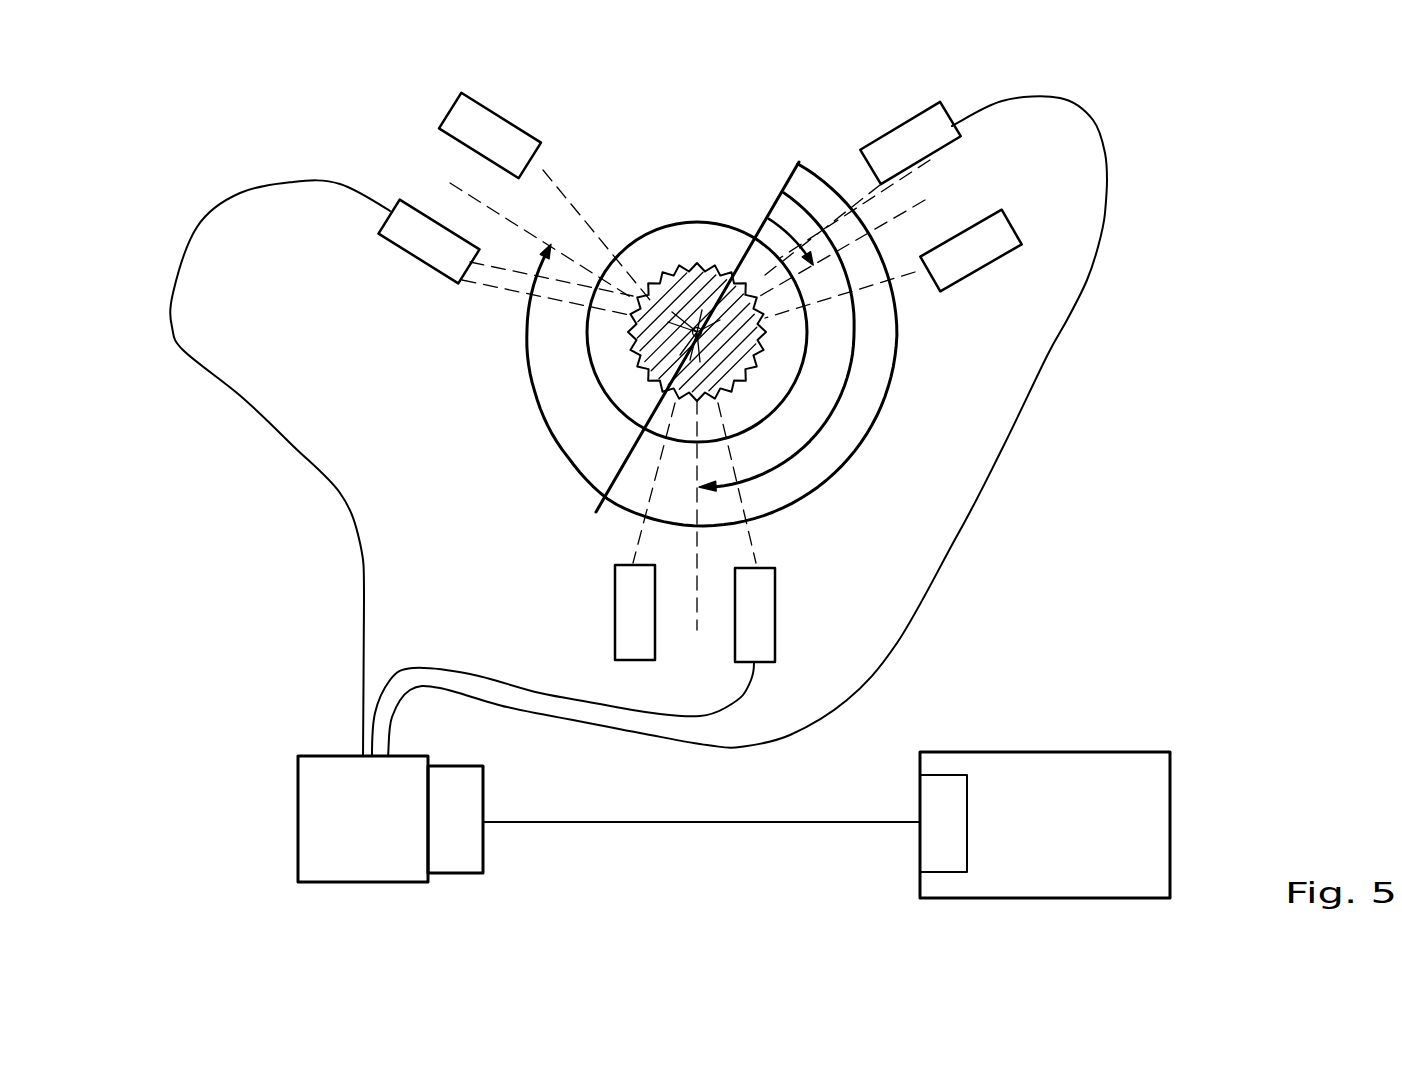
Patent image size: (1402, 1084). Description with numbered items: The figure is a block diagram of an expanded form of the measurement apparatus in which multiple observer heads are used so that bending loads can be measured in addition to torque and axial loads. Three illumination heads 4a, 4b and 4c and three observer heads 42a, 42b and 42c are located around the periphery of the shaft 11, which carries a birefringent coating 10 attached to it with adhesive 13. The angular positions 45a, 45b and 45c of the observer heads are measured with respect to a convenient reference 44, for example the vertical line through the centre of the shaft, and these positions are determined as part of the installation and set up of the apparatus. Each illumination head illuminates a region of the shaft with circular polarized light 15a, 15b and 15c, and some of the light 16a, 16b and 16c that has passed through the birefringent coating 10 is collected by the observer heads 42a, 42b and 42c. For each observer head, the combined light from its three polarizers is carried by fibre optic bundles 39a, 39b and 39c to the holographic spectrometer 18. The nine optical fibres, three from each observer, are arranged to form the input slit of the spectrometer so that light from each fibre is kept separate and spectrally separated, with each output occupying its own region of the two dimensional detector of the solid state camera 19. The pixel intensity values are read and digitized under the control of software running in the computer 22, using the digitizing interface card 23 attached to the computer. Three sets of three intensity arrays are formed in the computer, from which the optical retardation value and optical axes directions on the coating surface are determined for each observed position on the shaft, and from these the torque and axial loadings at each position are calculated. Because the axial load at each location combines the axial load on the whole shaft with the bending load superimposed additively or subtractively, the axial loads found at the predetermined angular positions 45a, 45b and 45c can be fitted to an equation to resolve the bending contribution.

The illumination head 4a is at (980, 235).
The illumination head 4b is at (470, 113).
The illumination head 4c is at (628, 630).
The birefringent coating 10 is at (787, 400).
The shaft 11 is at (752, 342).
The adhesive 13 is at (760, 373).
The circular polarized light 15a is at (903, 280).
The circular polarized light 15b is at (545, 173).
The circular polarized light 15c is at (637, 548).
The light passed through the birefringent coating 16a is at (852, 175).
The light passed through the birefringent coating 16b is at (505, 280).
The light passed through the birefringent coating 16c is at (757, 548).
The holographic spectrometer 18 is at (334, 775).
The solid state camera 19 is at (462, 807).
The computer 22 is at (1123, 783).
The digitizing interface card 23 is at (943, 790).
The fibre optic bundle 39a is at (1080, 293).
The fibre optic bundle 39b is at (237, 397).
The fibre optic bundle 39c is at (465, 672).
The observer head 42a is at (937, 113).
The observer head 42b is at (393, 236).
The observer head 42c is at (767, 617).
The reference 44 is at (797, 163).
The angular position 45a is at (778, 215).
The angular position 45b is at (550, 430).
The angular position 45c is at (793, 463).